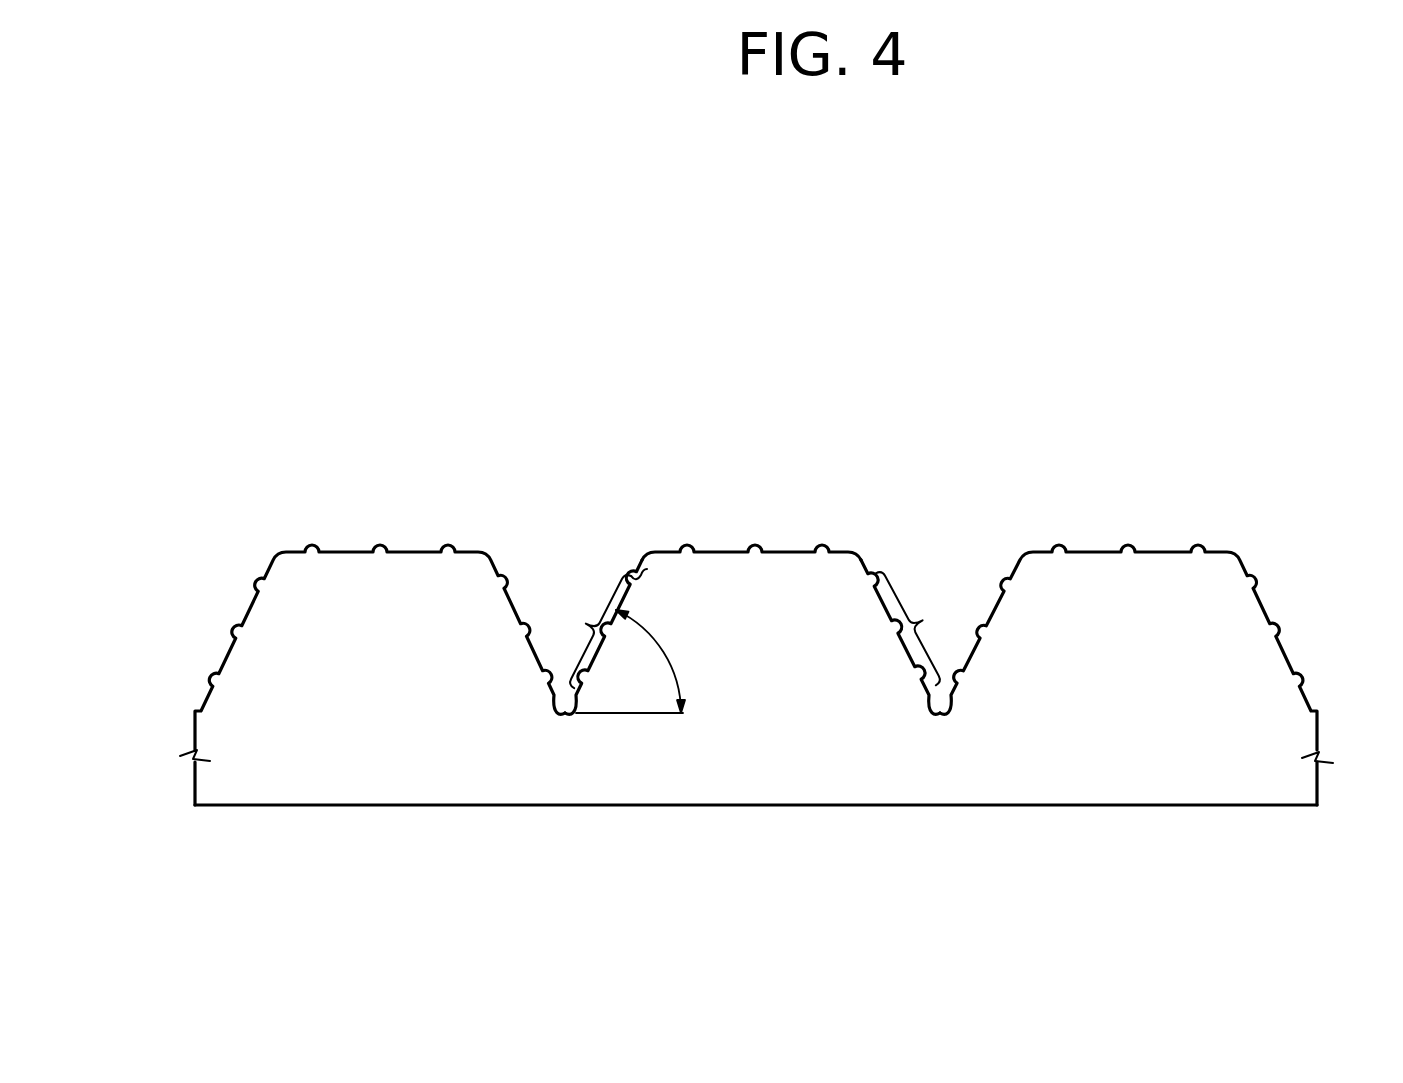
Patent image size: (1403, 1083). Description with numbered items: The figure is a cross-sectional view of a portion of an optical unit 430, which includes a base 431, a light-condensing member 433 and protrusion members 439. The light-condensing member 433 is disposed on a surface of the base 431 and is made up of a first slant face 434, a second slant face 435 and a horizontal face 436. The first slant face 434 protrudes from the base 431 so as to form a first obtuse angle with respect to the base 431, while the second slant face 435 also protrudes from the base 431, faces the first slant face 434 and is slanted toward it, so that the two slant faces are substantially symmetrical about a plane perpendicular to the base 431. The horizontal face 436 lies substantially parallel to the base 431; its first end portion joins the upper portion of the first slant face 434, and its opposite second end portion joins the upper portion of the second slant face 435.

The optical unit 430 is at (849, 305).
The base 431 is at (753, 775).
The light-condensing member 433 is at (940, 453).
The first slant face 434 is at (585, 623).
The second slant face 435 is at (923, 620).
The horizontal face 436 is at (840, 531).
The protrusion members 439 is at (640, 568).